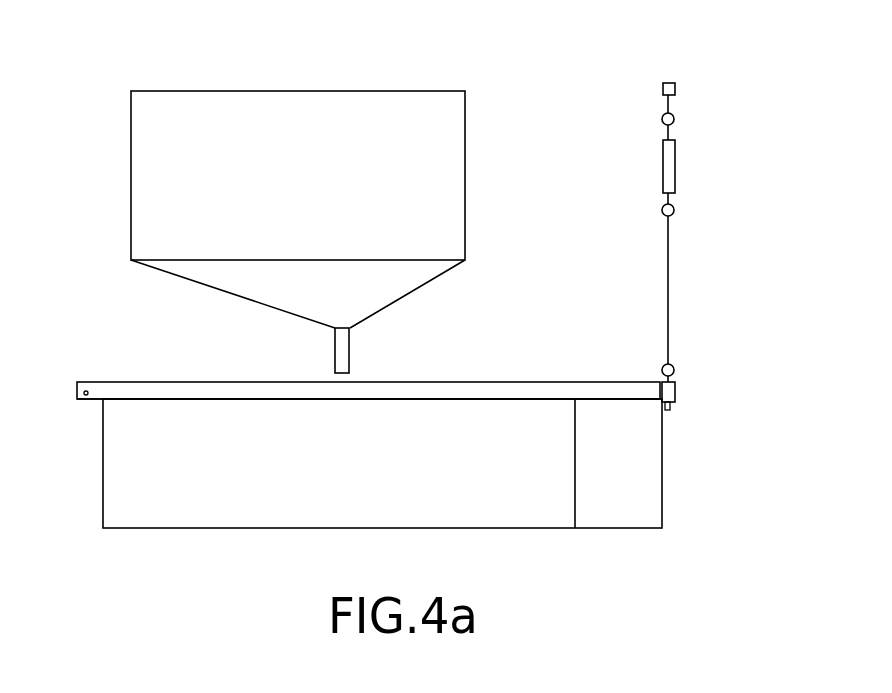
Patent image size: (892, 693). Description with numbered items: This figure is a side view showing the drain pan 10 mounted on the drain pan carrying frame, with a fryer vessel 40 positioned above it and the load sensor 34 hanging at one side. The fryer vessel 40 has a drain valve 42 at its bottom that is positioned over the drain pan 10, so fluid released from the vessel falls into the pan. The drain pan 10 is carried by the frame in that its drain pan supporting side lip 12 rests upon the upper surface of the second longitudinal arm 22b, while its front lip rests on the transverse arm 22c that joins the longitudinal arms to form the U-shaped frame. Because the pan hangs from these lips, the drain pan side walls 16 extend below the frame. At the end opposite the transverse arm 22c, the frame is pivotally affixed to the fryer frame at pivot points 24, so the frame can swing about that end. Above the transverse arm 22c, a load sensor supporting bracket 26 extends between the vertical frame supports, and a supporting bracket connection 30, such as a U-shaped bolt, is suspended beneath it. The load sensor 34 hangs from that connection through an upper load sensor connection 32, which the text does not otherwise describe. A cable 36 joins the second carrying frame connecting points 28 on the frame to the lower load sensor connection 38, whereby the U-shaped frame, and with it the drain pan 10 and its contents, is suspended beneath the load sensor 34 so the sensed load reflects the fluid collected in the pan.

The drain pan 10 is at (267, 528).
The drain pan supporting side lip 12 is at (157, 381).
The side walls 16 is at (320, 486).
The second longitudinal arm 22b is at (480, 394).
The transverse arm 22c is at (676, 392).
The pivot points 24 is at (78, 409).
The load sensor supporting bracket 26 is at (676, 92).
The second carrying frame connecting points 28 is at (676, 370).
The supporting bracket connection 30 is at (672, 105).
The connector 32 is at (660, 122).
The load sensor 34 is at (676, 165).
The cable 36 is at (672, 267).
The lower load sensor connection 38 is at (662, 208).
The fryer vessel 40 is at (466, 170).
The drain valve 42 is at (350, 354).